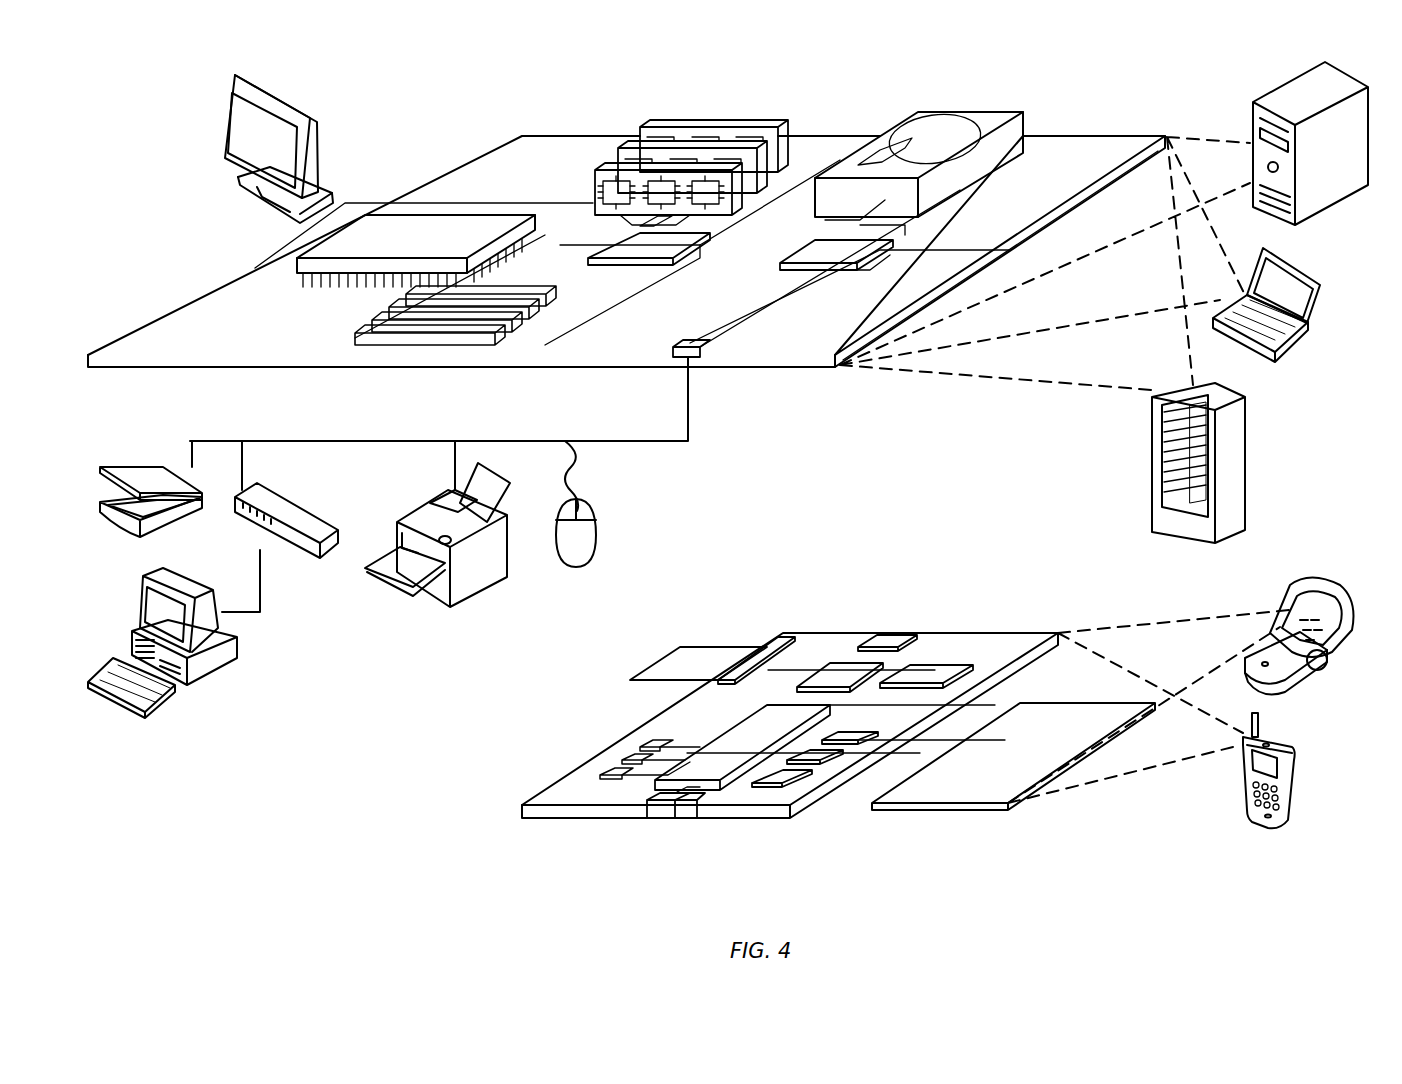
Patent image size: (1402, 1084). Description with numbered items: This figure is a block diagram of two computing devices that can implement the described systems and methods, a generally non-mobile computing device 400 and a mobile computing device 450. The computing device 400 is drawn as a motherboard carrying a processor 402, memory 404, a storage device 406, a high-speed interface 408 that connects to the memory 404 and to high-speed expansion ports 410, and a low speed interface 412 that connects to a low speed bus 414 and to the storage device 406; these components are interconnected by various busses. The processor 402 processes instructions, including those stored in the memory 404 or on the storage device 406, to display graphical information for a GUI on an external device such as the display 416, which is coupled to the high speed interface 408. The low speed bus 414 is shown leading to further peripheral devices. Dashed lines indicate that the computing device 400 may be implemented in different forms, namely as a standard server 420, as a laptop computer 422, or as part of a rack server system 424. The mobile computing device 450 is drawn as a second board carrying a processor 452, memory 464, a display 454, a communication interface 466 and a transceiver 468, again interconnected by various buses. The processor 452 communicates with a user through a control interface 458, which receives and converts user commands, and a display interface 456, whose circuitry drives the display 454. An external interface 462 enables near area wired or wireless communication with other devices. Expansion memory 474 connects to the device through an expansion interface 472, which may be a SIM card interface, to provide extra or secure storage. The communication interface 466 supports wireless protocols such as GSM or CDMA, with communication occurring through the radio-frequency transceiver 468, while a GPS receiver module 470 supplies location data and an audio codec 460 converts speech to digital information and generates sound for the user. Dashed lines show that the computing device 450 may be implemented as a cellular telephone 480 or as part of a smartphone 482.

The computing device 400 is at (440, 106).
The processor 402 is at (297, 264).
The memory 404 is at (647, 135).
The storage device 406 is at (909, 115).
The high-speed interface 408 is at (615, 247).
The high-speed expansion ports 410 is at (373, 323).
The low speed interface 412 is at (812, 250).
The low speed bus 414 is at (700, 354).
The display 416 is at (224, 76).
The standard server 420 is at (1250, 120).
The laptop computer 422 is at (1326, 284).
The rack server system 424 is at (1152, 492).
The computing device 450 is at (500, 815).
The processor 452 is at (712, 770).
The display 454 is at (970, 790).
The display interface 456 is at (790, 778).
The control interface 458 is at (832, 757).
The audio codec 460 is at (850, 736).
The external interface 462 is at (676, 815).
The memory 464 is at (606, 772).
The communication interface 466 is at (842, 673).
The transceiver 468 is at (928, 669).
The GPS receiver module 470 is at (894, 643).
The expansion interface 472 is at (770, 645).
The expansion memory 474 is at (733, 645).
The cellular telephone 480 is at (1296, 584).
The smartphone 482 is at (1244, 792).